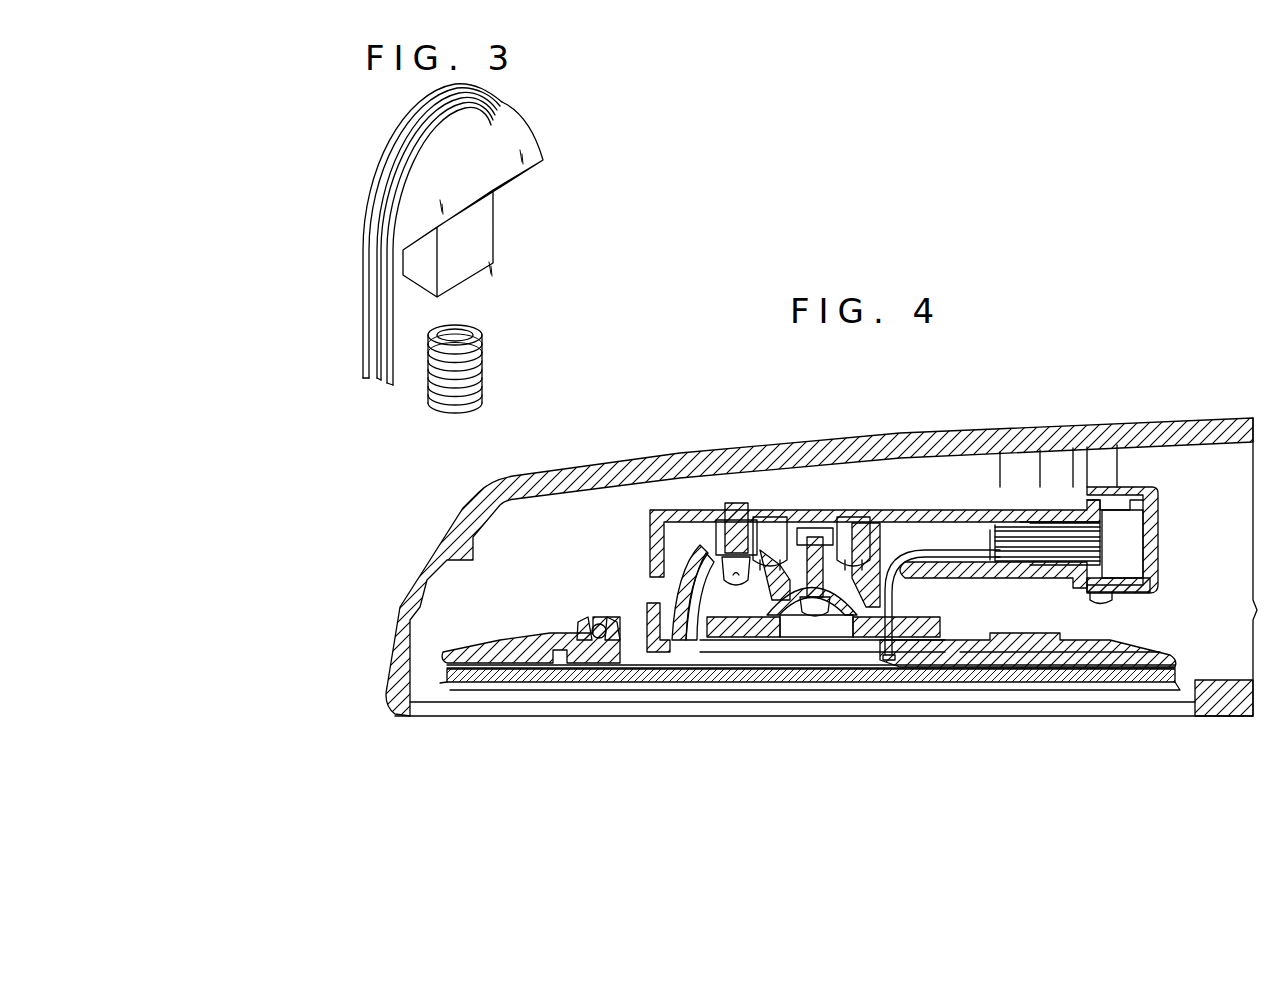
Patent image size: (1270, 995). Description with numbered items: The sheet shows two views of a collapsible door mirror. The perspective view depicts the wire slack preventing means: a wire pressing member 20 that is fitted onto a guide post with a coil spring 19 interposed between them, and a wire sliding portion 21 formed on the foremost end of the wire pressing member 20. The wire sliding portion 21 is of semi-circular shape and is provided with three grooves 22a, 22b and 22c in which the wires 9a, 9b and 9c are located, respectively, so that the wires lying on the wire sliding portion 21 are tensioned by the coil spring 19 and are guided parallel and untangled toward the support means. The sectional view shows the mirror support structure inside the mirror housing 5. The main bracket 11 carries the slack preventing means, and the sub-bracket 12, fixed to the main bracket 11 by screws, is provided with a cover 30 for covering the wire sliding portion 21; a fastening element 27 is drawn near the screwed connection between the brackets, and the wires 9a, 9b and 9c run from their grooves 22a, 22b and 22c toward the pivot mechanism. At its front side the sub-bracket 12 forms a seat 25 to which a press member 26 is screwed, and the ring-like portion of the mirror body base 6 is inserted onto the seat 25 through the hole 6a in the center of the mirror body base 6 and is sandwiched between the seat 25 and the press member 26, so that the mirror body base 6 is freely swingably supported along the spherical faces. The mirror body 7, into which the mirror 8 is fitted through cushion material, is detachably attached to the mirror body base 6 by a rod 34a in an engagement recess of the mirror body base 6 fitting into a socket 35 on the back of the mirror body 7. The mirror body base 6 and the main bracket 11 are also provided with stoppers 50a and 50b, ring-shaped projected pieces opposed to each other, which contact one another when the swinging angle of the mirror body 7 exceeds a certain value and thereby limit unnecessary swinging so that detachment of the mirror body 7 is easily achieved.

In FIG. 4, the mirror housing 5 is at (1178, 432).
In FIG. 4, the mirror body base 6 is at (653, 633).
In FIG. 4, the hole 6a is at (840, 630).
In FIG. 4, the mirror body 7 is at (492, 648).
In FIG. 4, the mirror 8 is at (682, 682).
In FIG. 3, the wire 9a is at (388, 350).
In FIG. 4, the wire 9a is at (945, 548).
In FIG. 3, the wire 9b is at (378, 315).
In FIG. 4, the wire 9b is at (1005, 537).
In FIG. 3, the wire 9c is at (365, 282).
In FIG. 4, the wire 9c is at (1012, 527).
In FIG. 4, the main bracket 11 is at (858, 525).
In FIG. 4, the sub-bracket 12 is at (1137, 591).
In FIG. 3, the coil spring 19 is at (485, 371).
In FIG. 3, the wire pressing member 20 is at (522, 158).
In FIG. 4, the wire pressing member 20 is at (1093, 508).
In FIG. 3, the wire sliding portion 21 is at (400, 120).
In FIG. 4, the wire sliding portion 21 is at (1073, 530).
In FIG. 3, the groove 22a is at (364, 222).
In FIG. 4, the groove 22a is at (1047, 570).
In FIG. 3, the groove 22b is at (383, 192).
In FIG. 4, the groove 22b is at (1018, 565).
In FIG. 3, the groove 22c is at (390, 145).
In FIG. 4, the groove 22c is at (1033, 523).
In FIG. 4, the seat 25 is at (800, 585).
In FIG. 4, the press member 26 is at (803, 615).
In FIG. 4, the screw 27 is at (772, 555).
In FIG. 4, the cover 30 is at (1150, 565).
In FIG. 4, the rod 34a is at (597, 648).
In FIG. 4, the socket 35 is at (610, 622).
In FIG. 4, the stopper 50a is at (647, 562).
In FIG. 4, the stopper 50b is at (660, 640).